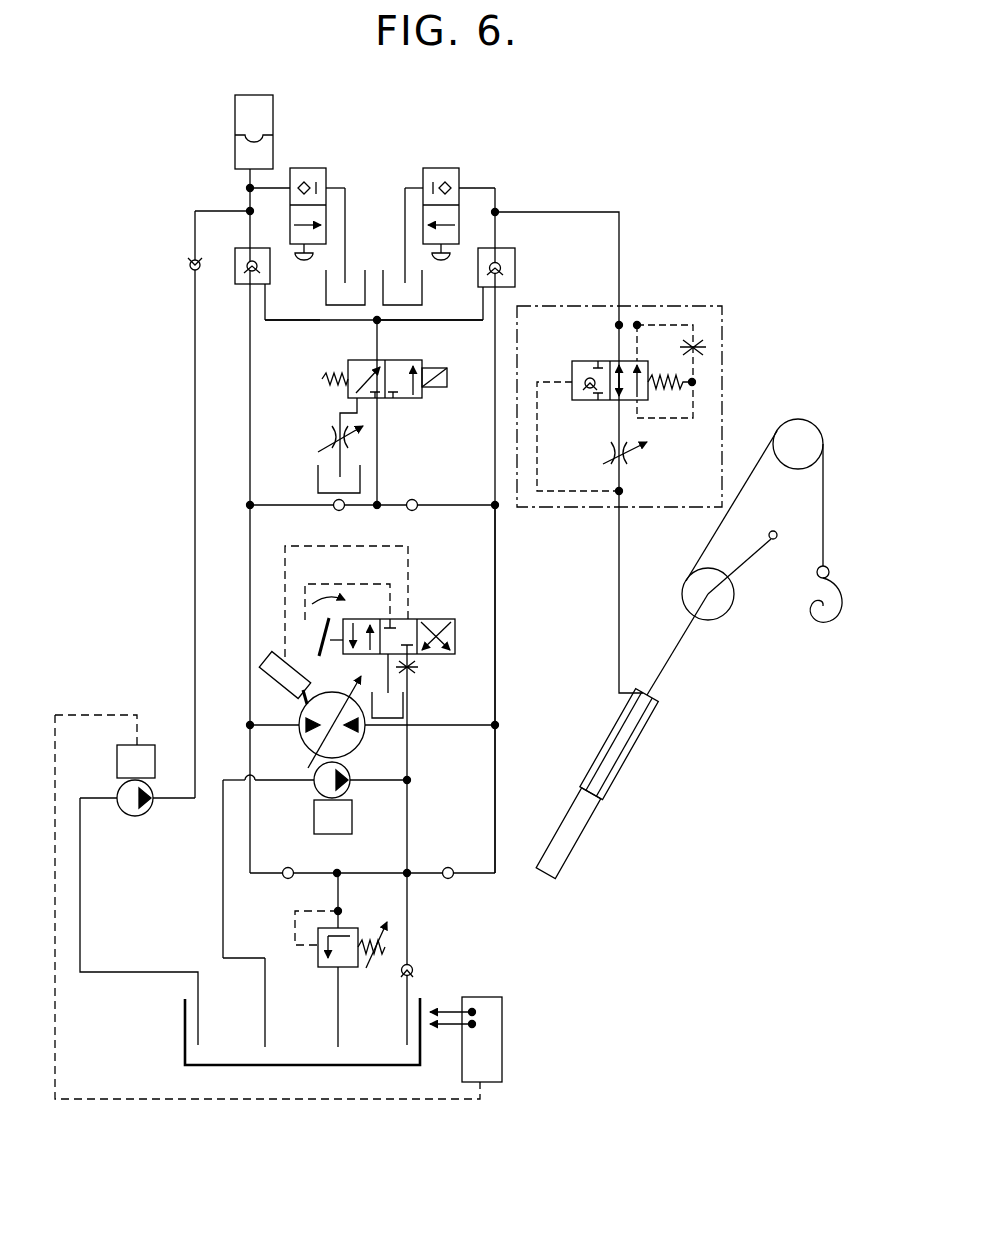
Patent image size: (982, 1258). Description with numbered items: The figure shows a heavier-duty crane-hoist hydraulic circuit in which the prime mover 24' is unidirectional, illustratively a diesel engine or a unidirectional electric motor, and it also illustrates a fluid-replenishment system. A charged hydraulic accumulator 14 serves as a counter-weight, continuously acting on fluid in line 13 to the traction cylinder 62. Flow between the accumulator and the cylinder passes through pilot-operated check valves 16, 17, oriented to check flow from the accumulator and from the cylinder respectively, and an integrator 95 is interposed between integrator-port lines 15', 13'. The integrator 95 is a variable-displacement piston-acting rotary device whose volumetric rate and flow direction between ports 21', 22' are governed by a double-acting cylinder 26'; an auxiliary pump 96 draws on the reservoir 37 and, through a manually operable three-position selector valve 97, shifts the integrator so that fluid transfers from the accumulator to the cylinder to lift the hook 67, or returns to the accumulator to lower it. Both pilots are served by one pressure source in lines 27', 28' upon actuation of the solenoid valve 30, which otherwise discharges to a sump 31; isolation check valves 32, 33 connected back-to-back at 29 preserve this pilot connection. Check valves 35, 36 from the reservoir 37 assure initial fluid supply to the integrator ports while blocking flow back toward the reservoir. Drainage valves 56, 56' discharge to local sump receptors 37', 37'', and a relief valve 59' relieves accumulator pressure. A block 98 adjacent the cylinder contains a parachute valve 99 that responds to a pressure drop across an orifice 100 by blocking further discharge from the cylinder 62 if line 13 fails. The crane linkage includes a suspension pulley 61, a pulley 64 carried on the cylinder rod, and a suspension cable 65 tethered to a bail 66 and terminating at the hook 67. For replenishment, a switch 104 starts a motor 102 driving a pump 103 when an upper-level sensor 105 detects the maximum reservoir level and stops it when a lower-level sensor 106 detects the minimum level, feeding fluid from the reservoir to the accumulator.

The charged hydraulic accumulator 14 is at (232, 127).
The pilot-operated check valve 16 is at (236, 262).
The pilot-operated check valve 17 is at (515, 256).
The line 13 is at (581, 451).
The integrator-port line 13' is at (525, 689).
The integrator-port line 15' is at (219, 504).
The drainage valve 56 is at (326, 196).
The drainage valve 56' is at (422, 196).
The local sump receptor 37' is at (318, 292).
The local sump receptor 37'' is at (429, 292).
The line 27' is at (292, 339).
The control line 28' is at (430, 339).
The solenoid-operated valve 30 is at (392, 402).
The sump 31 is at (318, 480).
The back-to-back connection 29 is at (378, 505).
The isolation check valve 32 is at (336, 510).
The isolation check valve 33 is at (414, 510).
The three-position selector valve 97 is at (437, 616).
The port 22' is at (414, 709).
The port 21' is at (372, 730).
The integrator 95 is at (356, 752).
The double-acting cylinder 26' is at (257, 680).
The auxiliary pump 96 is at (316, 788).
The prime mover 24' is at (303, 830).
The motor 102 is at (118, 748).
The pump 103 is at (130, 812).
The check valve 35 is at (291, 880).
The check valve 36 is at (445, 880).
The relief valve 59' is at (341, 945).
The reservoir 37 is at (264, 1031).
The switch 104 is at (492, 998).
The upper-level sensor 105 is at (448, 1008).
The lower-level sensor 106 is at (450, 1030).
The block 98 is at (724, 368).
The parachute valve 99 is at (596, 355).
The orifice 100 is at (632, 456).
The suspension pulley 61 is at (800, 422).
The suspension cable 65 is at (823, 507).
The hook 67 is at (826, 618).
The pulley 64 is at (712, 619).
The bail 66 is at (752, 562).
The traction cylinder 62 is at (592, 762).